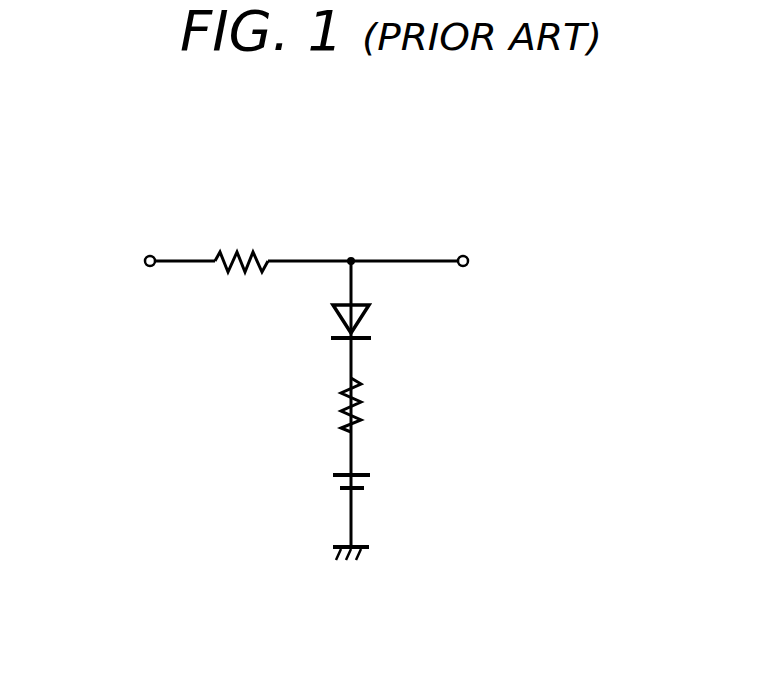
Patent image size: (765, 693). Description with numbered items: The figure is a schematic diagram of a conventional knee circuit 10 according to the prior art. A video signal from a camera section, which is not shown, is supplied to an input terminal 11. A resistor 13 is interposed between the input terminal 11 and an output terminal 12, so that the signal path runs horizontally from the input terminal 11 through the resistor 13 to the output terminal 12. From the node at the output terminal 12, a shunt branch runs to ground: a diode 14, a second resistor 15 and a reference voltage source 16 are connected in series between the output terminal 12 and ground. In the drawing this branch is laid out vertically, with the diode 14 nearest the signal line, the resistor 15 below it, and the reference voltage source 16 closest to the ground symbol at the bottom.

The knee circuit 10 is at (333, 191).
The input terminal 11 is at (150, 268).
The output terminal 12 is at (463, 268).
The resistor 13 is at (236, 274).
The diode 14 is at (358, 326).
The resistor 15 is at (360, 412).
The reference voltage source 16 is at (362, 480).